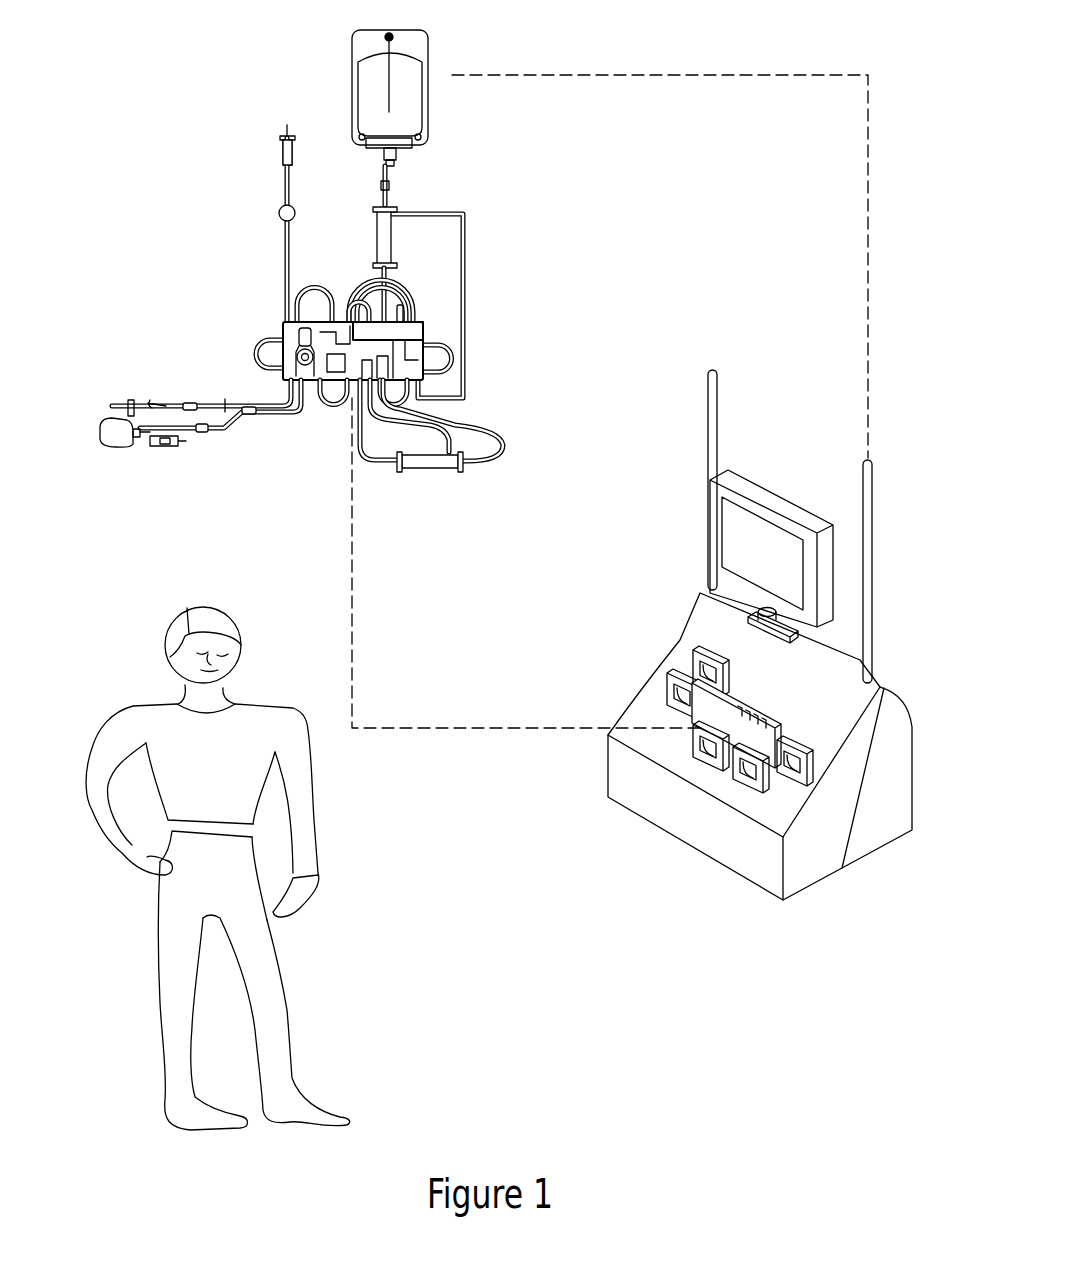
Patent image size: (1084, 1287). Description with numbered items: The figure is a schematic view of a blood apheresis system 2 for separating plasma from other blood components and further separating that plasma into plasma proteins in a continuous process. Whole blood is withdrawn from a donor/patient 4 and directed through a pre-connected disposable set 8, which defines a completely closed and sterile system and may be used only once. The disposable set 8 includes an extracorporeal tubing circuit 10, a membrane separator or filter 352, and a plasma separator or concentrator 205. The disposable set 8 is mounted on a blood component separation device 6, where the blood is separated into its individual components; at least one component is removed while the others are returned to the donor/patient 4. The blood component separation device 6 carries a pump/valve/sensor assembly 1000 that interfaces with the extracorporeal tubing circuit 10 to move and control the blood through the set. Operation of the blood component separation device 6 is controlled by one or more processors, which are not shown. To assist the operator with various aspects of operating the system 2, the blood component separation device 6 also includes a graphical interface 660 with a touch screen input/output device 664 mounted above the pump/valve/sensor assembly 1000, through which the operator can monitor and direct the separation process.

The blood apheresis system 2 is at (349, 606).
The donor/patient 4 is at (145, 662).
The blood component separation device 6 is at (727, 635).
The pre-connected disposable set 8 is at (185, 362).
The extracorporeal tubing circuit 10 is at (301, 274).
The plasma separator or concentrator 205 is at (374, 215).
The membrane separator or filter 352 is at (427, 471).
The graphical interface 660 is at (743, 516).
The touch screen input/output device 664 is at (750, 542).
The pump/valve/sensor assembly 1000 is at (658, 702).